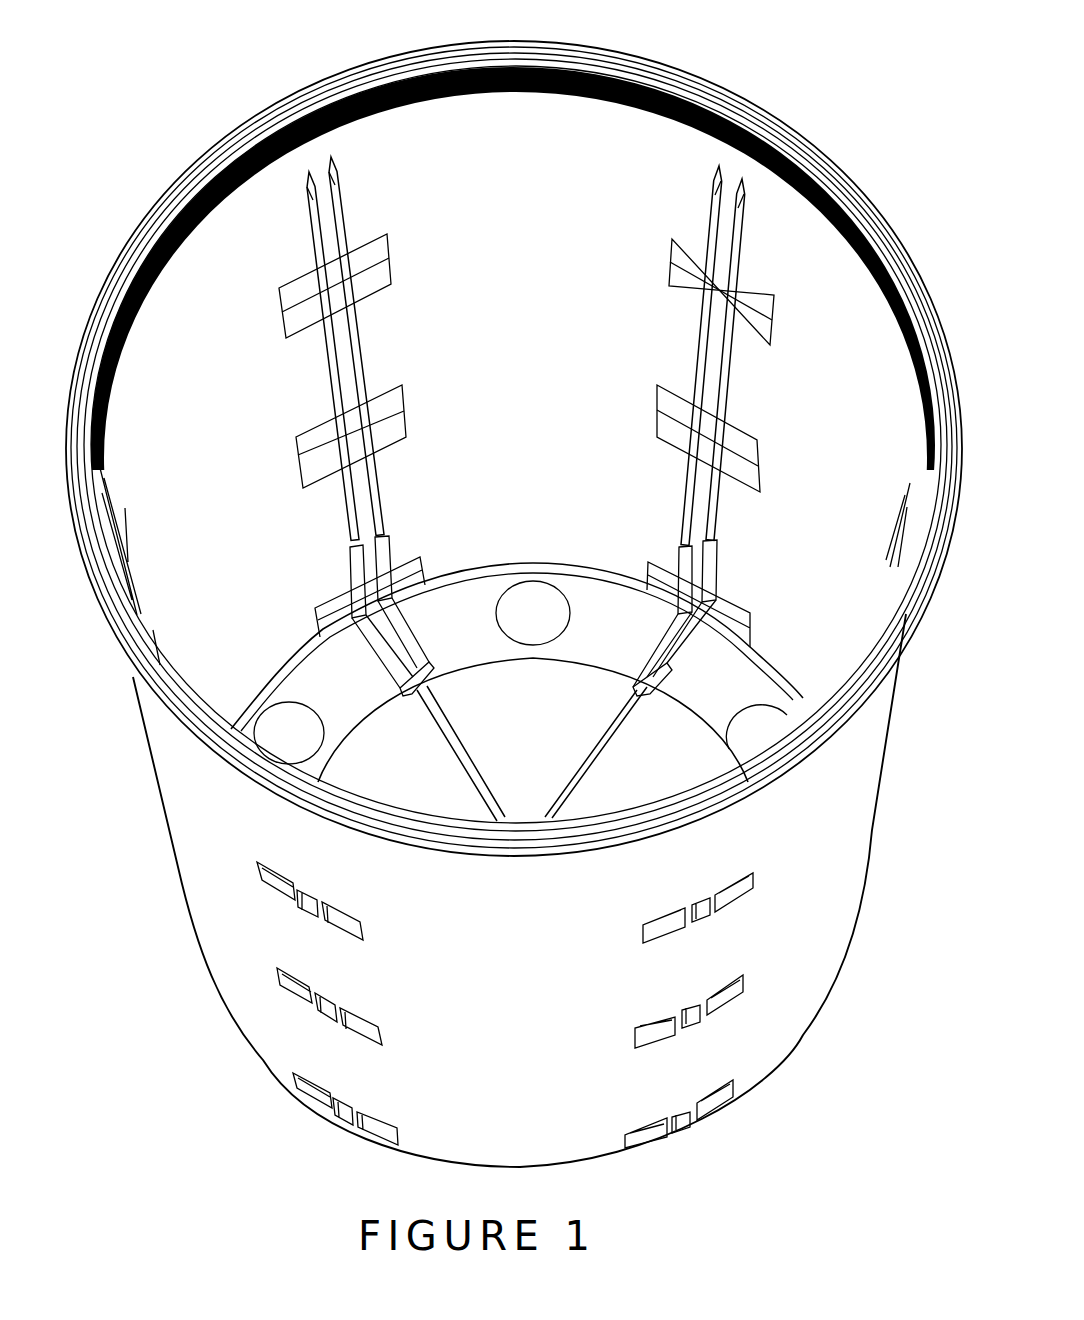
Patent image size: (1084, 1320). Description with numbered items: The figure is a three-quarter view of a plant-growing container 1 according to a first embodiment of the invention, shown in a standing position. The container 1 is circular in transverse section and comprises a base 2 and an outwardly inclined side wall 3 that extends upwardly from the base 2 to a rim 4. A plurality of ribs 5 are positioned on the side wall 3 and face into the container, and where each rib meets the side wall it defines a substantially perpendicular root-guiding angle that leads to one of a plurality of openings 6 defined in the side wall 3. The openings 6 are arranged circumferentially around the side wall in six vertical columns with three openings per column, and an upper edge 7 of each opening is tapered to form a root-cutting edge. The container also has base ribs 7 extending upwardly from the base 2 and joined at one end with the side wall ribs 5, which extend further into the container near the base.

The container 1 is at (166, 106).
The base 2 is at (647, 760).
The side wall 3 is at (172, 752).
The rim 4 is at (819, 161).
The ribs 5 is at (726, 386).
The openings 6 is at (688, 282).
The upper edge 7 is at (688, 252).